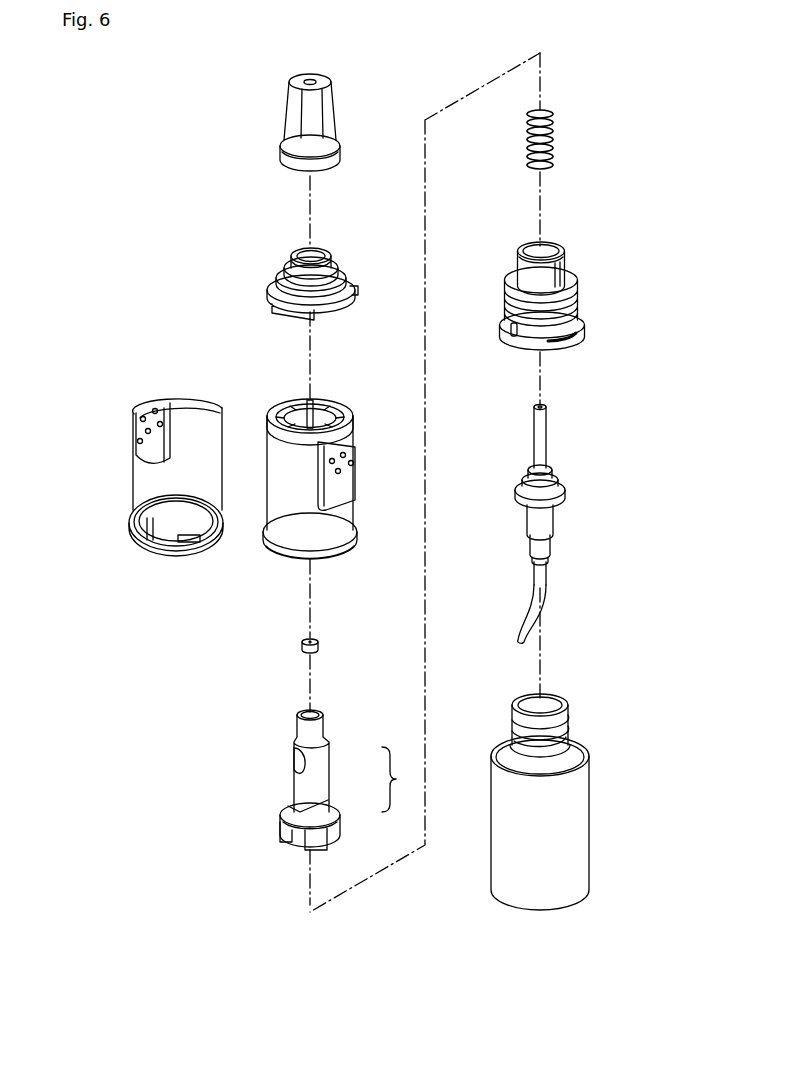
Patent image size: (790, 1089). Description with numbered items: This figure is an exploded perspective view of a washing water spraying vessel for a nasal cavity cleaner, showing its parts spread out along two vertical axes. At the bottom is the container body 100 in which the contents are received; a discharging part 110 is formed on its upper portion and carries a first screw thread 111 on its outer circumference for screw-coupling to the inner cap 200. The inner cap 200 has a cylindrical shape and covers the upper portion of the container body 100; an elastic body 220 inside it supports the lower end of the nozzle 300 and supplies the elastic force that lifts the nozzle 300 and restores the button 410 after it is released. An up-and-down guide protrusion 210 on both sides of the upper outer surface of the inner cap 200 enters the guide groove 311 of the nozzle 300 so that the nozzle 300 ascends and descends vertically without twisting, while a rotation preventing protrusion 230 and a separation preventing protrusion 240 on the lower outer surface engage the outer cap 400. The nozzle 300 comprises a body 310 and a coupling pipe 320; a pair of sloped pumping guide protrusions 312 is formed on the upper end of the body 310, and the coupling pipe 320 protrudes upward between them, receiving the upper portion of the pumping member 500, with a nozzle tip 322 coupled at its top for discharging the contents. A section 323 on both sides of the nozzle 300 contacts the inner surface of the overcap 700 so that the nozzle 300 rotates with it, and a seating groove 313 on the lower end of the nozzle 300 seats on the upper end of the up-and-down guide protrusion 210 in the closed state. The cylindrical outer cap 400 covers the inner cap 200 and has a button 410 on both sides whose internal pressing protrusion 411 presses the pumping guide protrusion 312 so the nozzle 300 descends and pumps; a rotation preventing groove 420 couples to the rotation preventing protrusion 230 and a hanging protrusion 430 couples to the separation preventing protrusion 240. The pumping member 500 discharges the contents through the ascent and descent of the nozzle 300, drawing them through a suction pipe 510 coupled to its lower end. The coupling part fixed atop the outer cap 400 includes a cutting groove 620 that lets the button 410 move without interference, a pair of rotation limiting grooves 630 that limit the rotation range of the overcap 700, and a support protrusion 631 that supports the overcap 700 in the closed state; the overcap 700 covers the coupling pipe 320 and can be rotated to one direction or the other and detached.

The container body 100 is at (585, 845).
The discharging part 110 is at (568, 702).
The first screw thread 111 is at (575, 730).
The inner cap 200 is at (578, 297).
The up-and-down guide protrusion 210 is at (565, 270).
The elastic body 220 is at (553, 140).
The rotation preventing protrusion 230 is at (505, 325).
The separation preventing protrusion 240 is at (586, 325).
The nozzle 300 is at (405, 779).
The body 310 is at (318, 812).
The guide groove 311 is at (330, 838).
The pumping guide protrusion 312 is at (295, 805).
The seating groove 313 is at (288, 840).
The coupling pipe 320 is at (320, 763).
The nozzle tip 322 is at (318, 645).
The section 323 is at (290, 755).
The outer cap 400 is at (345, 505).
The button 410 is at (350, 466).
The pressing protrusion 411 is at (318, 405).
The rotation preventing groove 420 is at (150, 548).
The hanging protrusion 430 is at (210, 540).
The pumping member 500 is at (565, 490).
The suction pipe 510 is at (545, 595).
The cutting groove 620 is at (348, 297).
The rotation limiting groove 630 is at (285, 277).
The support protrusion 631 is at (352, 272).
The overcap 700 is at (327, 113).